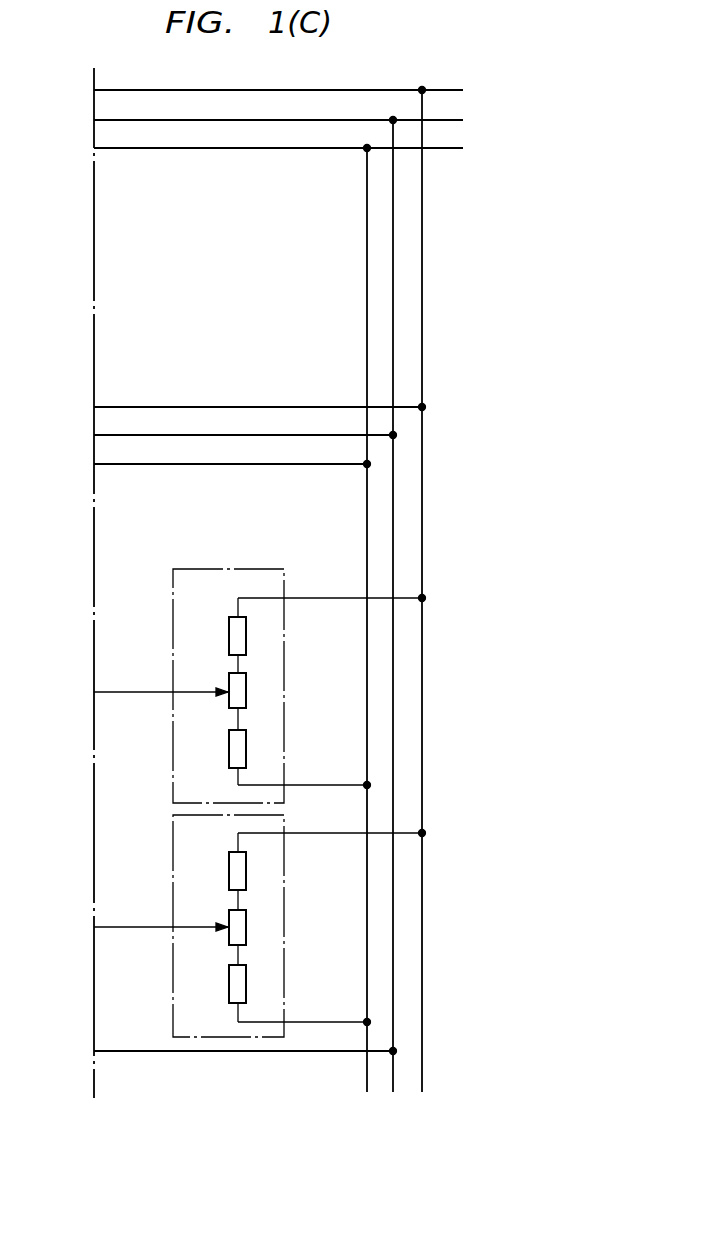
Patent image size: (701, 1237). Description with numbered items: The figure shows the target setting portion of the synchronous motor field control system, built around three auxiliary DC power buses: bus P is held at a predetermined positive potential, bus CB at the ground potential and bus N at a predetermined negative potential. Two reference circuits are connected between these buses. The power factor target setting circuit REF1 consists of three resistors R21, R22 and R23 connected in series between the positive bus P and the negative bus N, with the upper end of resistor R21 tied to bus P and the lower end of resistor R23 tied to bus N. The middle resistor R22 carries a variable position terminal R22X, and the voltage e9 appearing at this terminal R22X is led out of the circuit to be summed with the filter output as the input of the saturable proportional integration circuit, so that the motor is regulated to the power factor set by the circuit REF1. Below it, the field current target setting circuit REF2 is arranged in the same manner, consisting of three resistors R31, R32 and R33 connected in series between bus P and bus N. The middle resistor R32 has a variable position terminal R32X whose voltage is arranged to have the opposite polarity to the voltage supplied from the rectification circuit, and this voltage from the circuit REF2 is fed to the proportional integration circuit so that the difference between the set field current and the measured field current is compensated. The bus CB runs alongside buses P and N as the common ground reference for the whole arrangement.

The positive supply bus P is at (286, 597).
The common bus CB is at (292, 612).
The negative supply bus N is at (287, 626).
The first reference voltage circuit REF1 is at (220, 790).
The second reference voltage circuit REF2 is at (299, 926).
The resistor R21 is at (246, 640).
The variable resistor R22 is at (246, 697).
The resistor R23 is at (246, 756).
The tap R22X of resistor R22 R22X is at (161, 682).
The reference voltage output e9 is at (132, 675).
The resistor R31 is at (246, 877).
The variable resistor R32 is at (246, 934).
The resistor R33 is at (246, 991).
The tap R32X of resistor R32 R32X is at (161, 918).